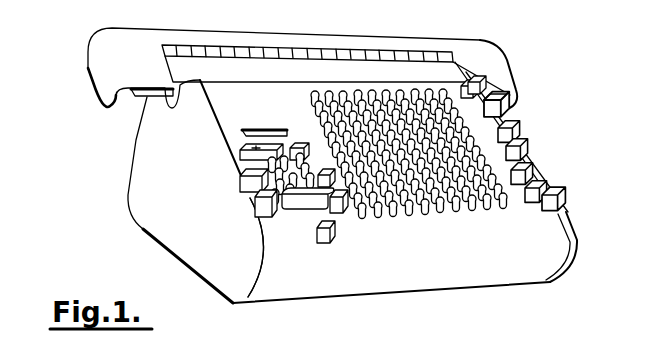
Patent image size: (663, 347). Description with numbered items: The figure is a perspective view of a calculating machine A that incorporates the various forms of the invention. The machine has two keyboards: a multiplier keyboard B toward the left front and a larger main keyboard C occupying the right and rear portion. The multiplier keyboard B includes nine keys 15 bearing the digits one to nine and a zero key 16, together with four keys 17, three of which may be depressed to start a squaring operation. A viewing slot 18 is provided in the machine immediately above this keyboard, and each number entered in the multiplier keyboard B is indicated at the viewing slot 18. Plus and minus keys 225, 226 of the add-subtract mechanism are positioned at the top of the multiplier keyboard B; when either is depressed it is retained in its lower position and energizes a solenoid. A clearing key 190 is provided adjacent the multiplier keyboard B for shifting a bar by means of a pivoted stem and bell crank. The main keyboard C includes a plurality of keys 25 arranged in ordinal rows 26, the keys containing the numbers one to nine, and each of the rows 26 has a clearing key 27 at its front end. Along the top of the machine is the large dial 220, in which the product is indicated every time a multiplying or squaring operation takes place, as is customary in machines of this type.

The large dial 220 is at (402, 53).
The keys 25 is at (503, 112).
The main keyboard C is at (483, 143).
The viewing slot 18 is at (240, 130).
The plus key 225 is at (240, 151).
The minus key 226 is at (300, 140).
The keys 15 is at (243, 175).
The keys 17 is at (252, 190).
The calculating machine A is at (128, 184).
The multiplier keyboard B is at (252, 197).
The zero key 16 is at (297, 208).
The clearing key 190 is at (330, 245).
The clearing key 27 is at (386, 213).
The ordinal rows 26 is at (473, 206).